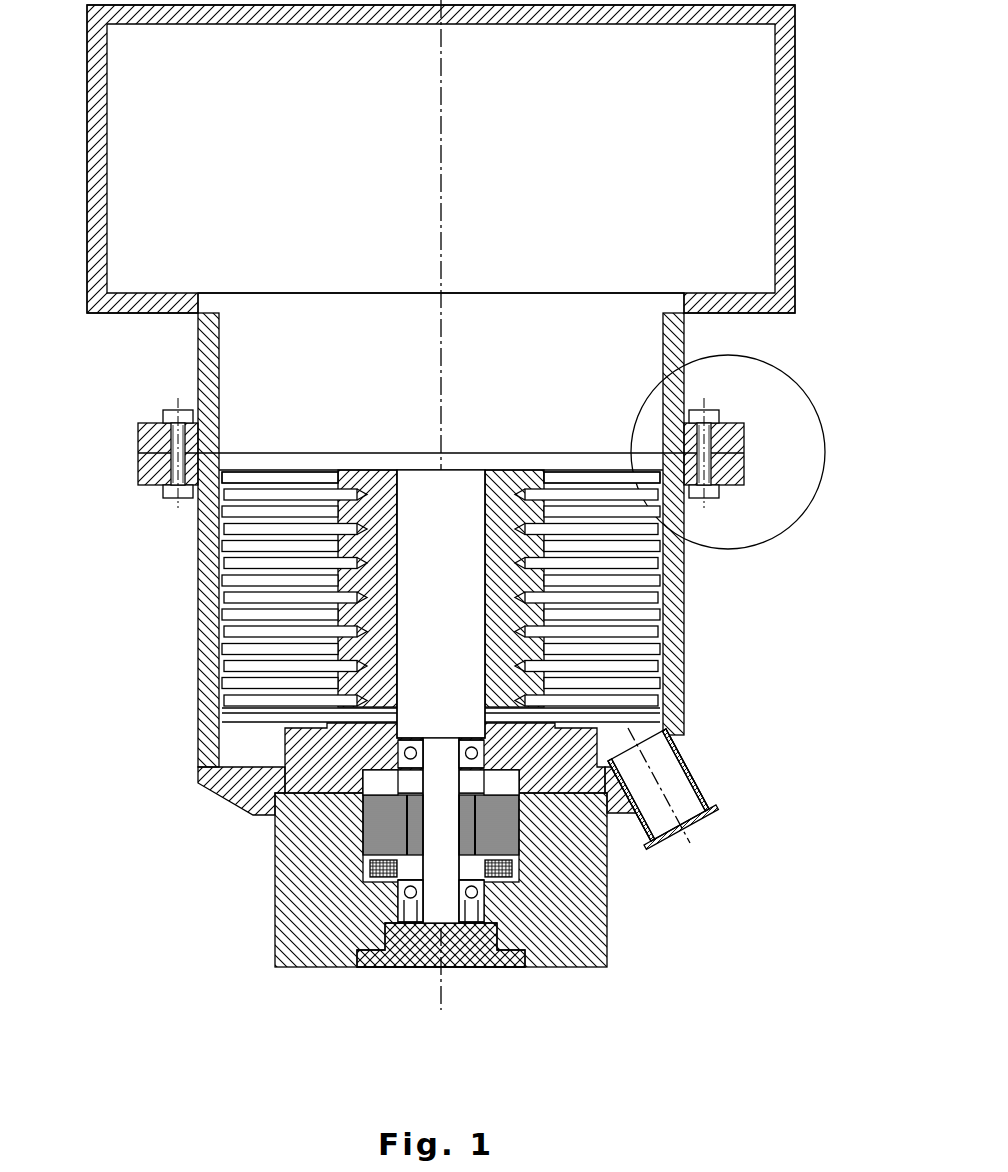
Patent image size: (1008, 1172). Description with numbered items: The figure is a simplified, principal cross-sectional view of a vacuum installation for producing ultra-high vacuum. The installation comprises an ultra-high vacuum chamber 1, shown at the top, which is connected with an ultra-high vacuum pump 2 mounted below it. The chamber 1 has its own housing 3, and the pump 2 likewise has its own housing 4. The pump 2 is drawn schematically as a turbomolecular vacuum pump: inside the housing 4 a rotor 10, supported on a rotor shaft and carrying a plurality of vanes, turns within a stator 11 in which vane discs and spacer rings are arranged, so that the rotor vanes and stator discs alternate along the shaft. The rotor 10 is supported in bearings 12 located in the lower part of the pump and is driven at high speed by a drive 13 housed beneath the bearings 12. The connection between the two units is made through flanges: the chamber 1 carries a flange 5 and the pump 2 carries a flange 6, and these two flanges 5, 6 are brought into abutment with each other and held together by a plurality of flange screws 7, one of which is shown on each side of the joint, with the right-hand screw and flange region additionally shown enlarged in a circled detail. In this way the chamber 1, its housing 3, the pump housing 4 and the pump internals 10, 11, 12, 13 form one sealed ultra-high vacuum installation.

The ultra-high vacuum chamber 1 is at (715, 98).
The ultra-high vacuum pump 2 is at (665, 965).
The housing 3 is at (795, 206).
The housing 4 is at (677, 667).
The flange 5 is at (730, 421).
The flange 6 is at (728, 473).
The flange screws 7 is at (138, 469).
The rotor 10 is at (623, 515).
The stator 11 is at (655, 617).
The bearings 12 is at (600, 752).
The drive 13 is at (545, 855).